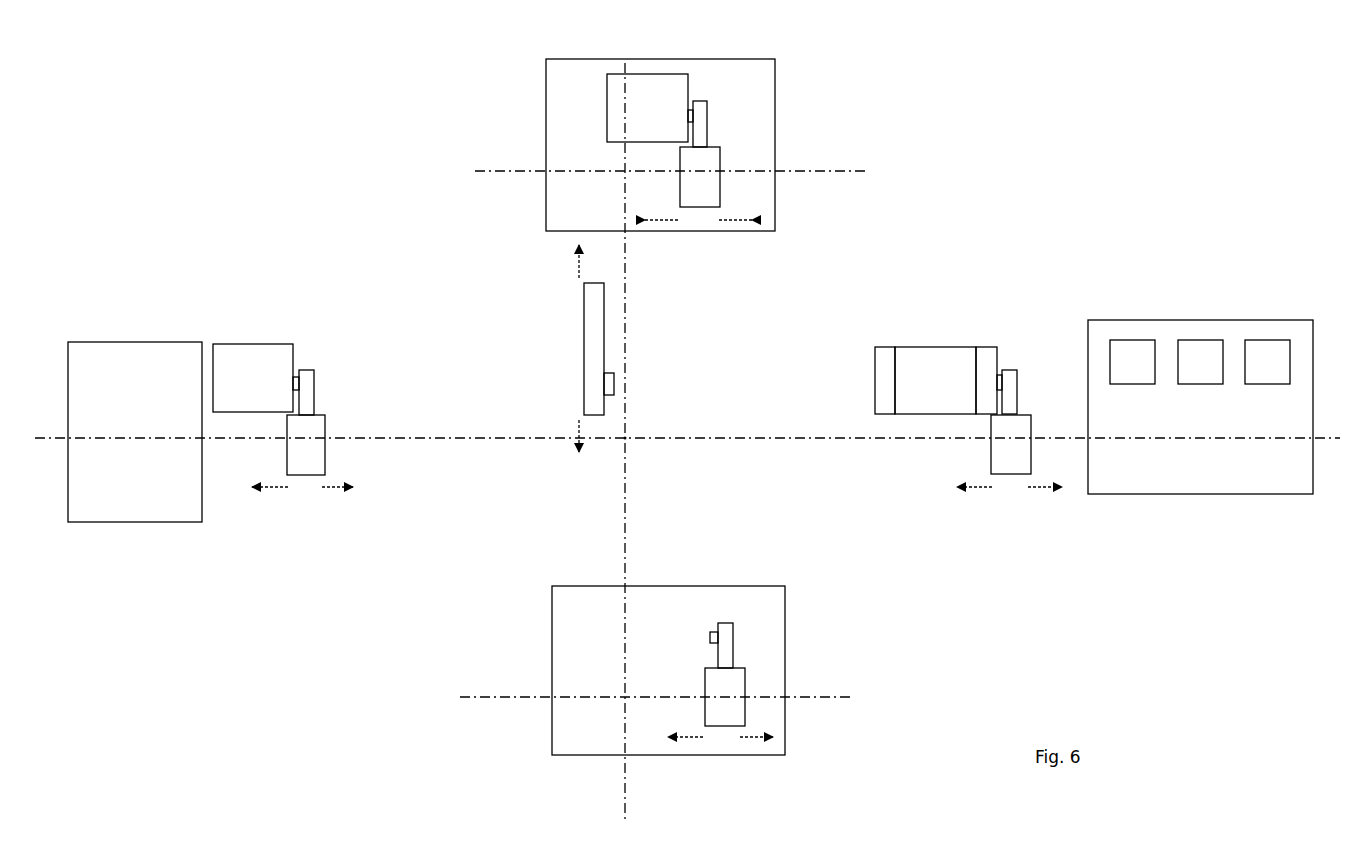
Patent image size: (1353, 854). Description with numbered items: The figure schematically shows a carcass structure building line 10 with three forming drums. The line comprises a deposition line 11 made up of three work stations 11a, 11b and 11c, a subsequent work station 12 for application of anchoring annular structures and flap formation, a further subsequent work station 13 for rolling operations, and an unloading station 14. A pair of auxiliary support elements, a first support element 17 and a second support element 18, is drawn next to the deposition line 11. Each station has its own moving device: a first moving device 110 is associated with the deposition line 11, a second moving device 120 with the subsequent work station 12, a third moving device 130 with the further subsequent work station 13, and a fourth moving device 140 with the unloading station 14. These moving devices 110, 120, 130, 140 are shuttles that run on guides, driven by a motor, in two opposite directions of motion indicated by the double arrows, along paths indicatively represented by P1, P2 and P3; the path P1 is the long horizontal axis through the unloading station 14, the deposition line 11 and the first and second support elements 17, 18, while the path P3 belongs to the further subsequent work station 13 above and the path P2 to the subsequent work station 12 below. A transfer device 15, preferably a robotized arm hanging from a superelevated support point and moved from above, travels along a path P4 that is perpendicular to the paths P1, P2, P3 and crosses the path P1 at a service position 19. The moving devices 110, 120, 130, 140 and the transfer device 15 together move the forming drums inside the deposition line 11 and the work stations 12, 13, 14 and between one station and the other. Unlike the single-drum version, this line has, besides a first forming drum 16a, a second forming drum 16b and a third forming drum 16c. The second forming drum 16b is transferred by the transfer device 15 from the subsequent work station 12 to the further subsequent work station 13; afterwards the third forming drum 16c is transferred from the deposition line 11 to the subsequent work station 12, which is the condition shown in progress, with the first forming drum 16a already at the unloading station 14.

The carcass structure building line 10 is at (167, 137).
The deposition line 11 is at (1152, 478).
The work station 11a is at (1135, 355).
The work station 11b is at (1200, 355).
The work station 11c is at (1265, 355).
The subsequent work station 12 is at (718, 750).
The further subsequent work station 13 is at (555, 92).
The unloading station 14 is at (139, 375).
The transfer device 15 is at (590, 340).
The first forming drum 16a is at (228, 347).
The second forming drum 16b is at (651, 85).
The third forming drum 16c is at (935, 357).
The first support element 17 is at (885, 360).
The second support element 18 is at (985, 353).
The service position 19 is at (628, 437).
The first moving device 110 is at (1010, 382).
The second moving device 120 is at (725, 652).
The third moving device 130 is at (703, 125).
The fourth moving device 140 is at (303, 373).
The path P1 is at (763, 442).
The path P2 is at (823, 700).
The path P3 is at (818, 177).
The path P4 is at (627, 332).